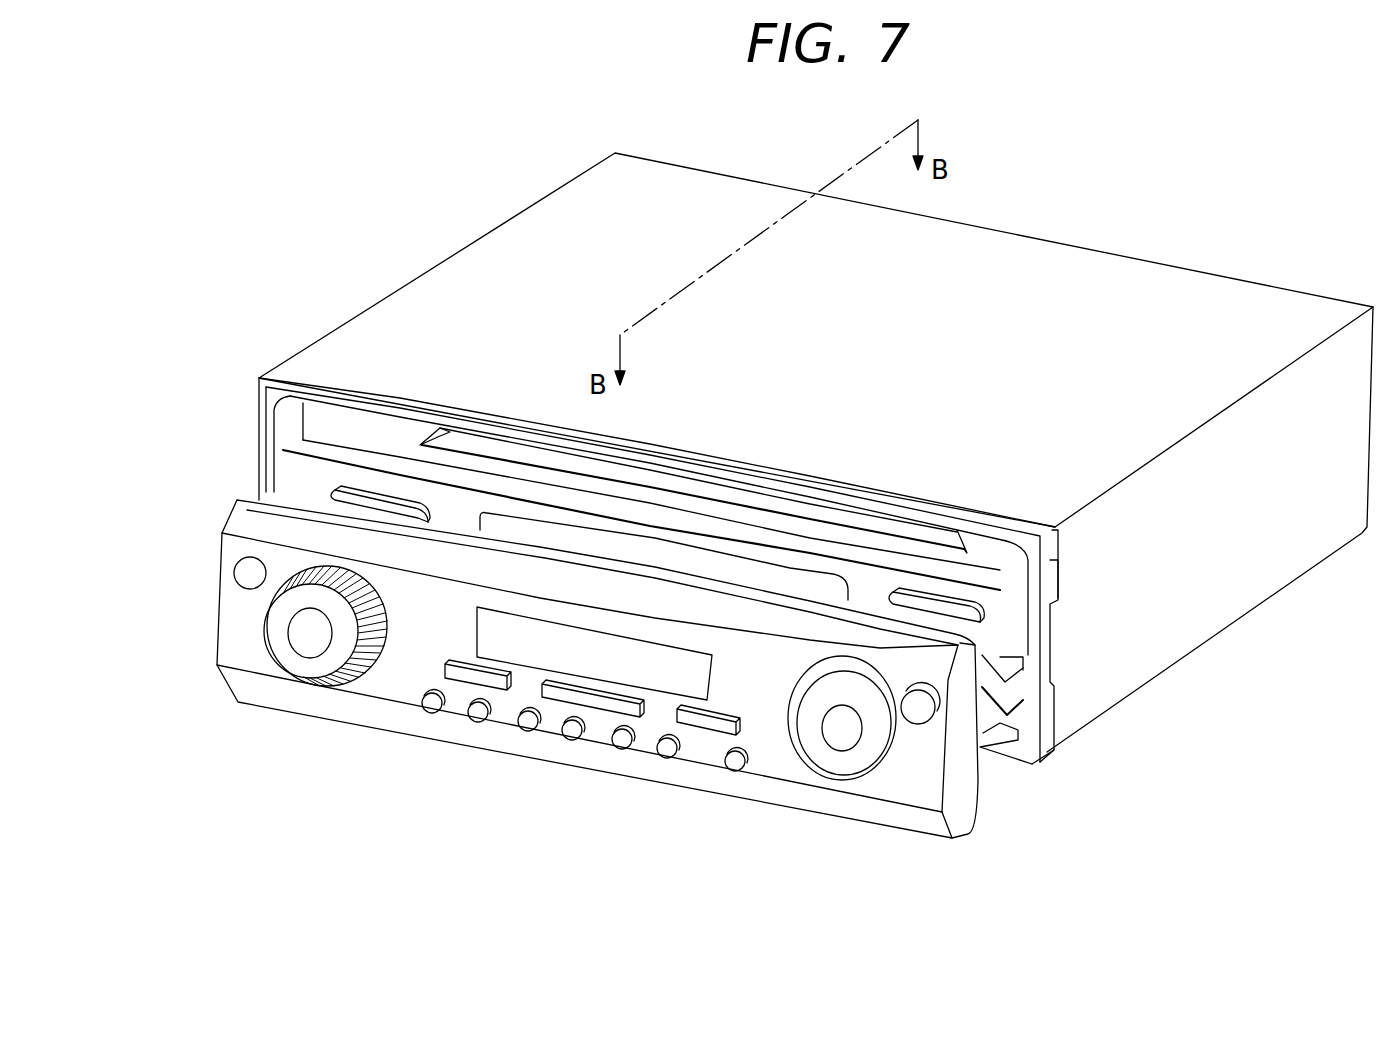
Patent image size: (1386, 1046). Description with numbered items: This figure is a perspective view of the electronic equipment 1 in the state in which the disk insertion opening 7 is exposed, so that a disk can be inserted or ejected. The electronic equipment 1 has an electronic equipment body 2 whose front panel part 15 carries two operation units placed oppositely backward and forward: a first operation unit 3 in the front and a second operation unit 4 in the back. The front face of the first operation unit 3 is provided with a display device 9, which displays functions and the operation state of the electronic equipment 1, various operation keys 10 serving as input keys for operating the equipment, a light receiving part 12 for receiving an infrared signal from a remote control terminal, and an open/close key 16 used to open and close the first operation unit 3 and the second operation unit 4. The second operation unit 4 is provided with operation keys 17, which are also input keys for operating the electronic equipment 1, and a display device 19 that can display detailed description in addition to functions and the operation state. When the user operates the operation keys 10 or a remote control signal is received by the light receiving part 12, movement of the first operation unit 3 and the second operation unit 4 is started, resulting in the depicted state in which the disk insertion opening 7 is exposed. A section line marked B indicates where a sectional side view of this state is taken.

The electronic equipment 1 is at (760, 498).
The electronic equipment body 2 is at (1022, 210).
The first operation unit 3 is at (700, 652).
The second operation unit 4 is at (980, 562).
The disk insertion opening 7 is at (535, 440).
The display device 9 is at (667, 665).
The operation keys 10 is at (327, 665).
The light receiving part 12 is at (233, 573).
The front panel part 15 is at (1053, 575).
The open/close key 16 is at (918, 716).
The operation keys 17 is at (335, 490).
The display device 19 is at (803, 577).